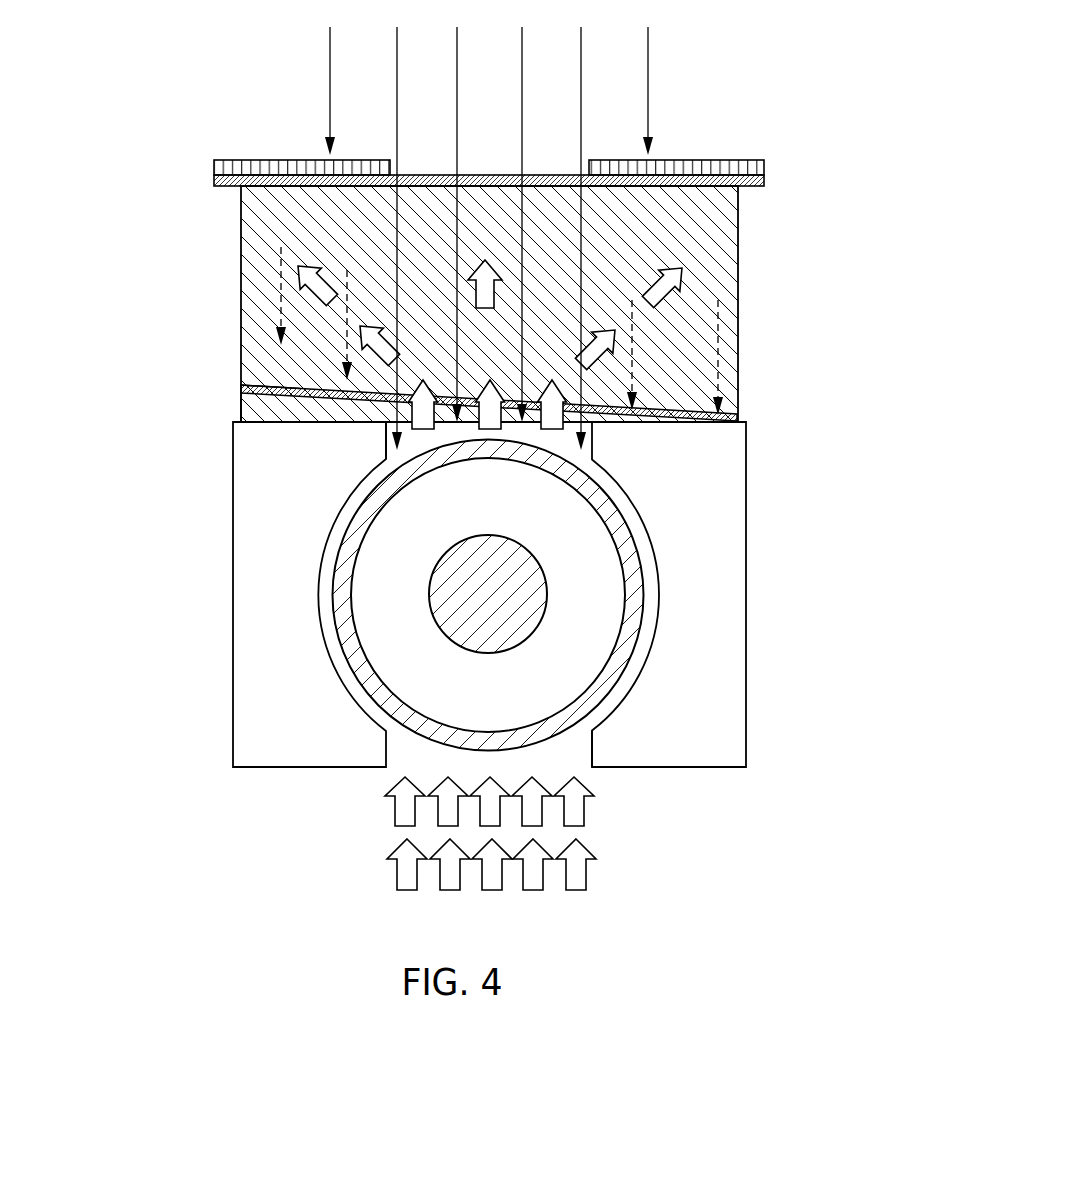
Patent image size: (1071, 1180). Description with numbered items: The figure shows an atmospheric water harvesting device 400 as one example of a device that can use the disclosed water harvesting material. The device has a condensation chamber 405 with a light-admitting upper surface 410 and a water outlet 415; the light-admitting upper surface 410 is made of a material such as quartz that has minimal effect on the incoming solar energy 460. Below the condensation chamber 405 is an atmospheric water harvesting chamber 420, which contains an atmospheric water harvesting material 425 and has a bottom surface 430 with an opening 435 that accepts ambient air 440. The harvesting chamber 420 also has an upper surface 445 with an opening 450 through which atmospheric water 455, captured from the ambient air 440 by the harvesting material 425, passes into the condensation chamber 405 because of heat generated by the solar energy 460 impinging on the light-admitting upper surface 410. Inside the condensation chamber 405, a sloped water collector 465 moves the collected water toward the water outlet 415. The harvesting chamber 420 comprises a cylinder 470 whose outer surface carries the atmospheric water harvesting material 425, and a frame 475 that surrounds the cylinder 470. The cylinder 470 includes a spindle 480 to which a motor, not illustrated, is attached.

The atmospheric water harvesting device 400 is at (122, 892).
The condensation chamber 405 is at (116, 151).
The light-admitting upper surface 410 is at (764, 184).
The water outlet 415 is at (740, 413).
The atmospheric water harvesting chamber 420 is at (116, 422).
The atmospheric water harvesting material 425 is at (645, 612).
The bottom surface 430 is at (688, 768).
The opening 435 is at (587, 757).
The ambient air 440 is at (397, 876).
The upper surface 445 is at (262, 401).
The opening 450 is at (386, 421).
The atmospheric water 455 is at (638, 420).
The solar energy 460 is at (650, 87).
The sloped water collector 465 is at (257, 382).
The cylinder 470 is at (390, 637).
The frame 475 is at (747, 684).
The spindle 480 is at (467, 583).